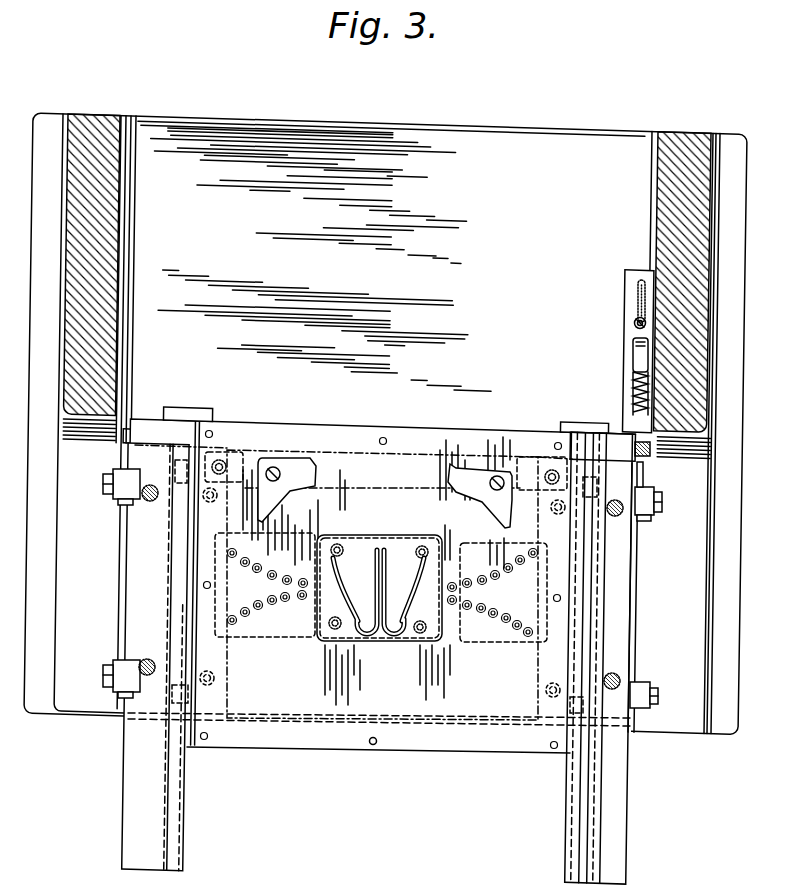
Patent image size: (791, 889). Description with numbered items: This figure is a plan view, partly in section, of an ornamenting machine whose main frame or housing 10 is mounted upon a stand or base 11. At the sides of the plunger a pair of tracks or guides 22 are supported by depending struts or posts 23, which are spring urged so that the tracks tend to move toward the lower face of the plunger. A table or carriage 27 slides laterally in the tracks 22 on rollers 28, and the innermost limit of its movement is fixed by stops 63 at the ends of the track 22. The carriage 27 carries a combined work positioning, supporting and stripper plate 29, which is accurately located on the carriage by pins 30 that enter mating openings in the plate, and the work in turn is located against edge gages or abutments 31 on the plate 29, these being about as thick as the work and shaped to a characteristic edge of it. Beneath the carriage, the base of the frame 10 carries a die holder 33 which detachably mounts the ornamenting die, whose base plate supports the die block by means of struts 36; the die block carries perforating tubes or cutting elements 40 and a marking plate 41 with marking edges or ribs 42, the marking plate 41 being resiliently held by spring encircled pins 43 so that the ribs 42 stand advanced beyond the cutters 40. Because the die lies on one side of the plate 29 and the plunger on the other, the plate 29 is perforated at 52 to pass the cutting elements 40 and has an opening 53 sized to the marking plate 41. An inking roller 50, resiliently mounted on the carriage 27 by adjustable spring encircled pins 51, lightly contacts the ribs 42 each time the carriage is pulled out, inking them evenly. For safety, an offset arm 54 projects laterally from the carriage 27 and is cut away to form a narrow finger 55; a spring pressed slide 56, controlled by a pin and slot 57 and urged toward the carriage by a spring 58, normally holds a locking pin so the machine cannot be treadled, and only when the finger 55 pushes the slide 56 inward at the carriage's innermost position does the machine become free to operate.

The main frame or housing 10 is at (93, 125).
The stand or base 11 is at (57, 697).
The tracks or guides 22 is at (137, 808).
The depending struts or posts 23 is at (142, 494).
The table or carriage 27 is at (323, 733).
The rollers 28 is at (172, 696).
The work positioning, supporting and stripper plate 29 is at (415, 712).
The pins 30 is at (374, 748).
The edge gages or abutments 31 is at (300, 468).
The die holder 33 is at (640, 596).
The struts 36 is at (545, 690).
The perforating tubes or cutting elements 40 is at (510, 615).
The marking plate 41 is at (365, 545).
The marking edges or ribs 42 is at (377, 641).
The spring encircled pins 43 is at (447, 648).
The inking roller 50 is at (395, 466).
The adjustable spring encircled pins 51 is at (222, 455).
The perforations 52 is at (288, 576).
The opening 53 is at (318, 644).
The offset arm 54 is at (613, 440).
The projecting finger 55 is at (640, 452).
The spring pressed slide 56 is at (635, 346).
The pin and slot 57 is at (640, 274).
The spring 58 is at (634, 385).
The stops 63 is at (178, 405).